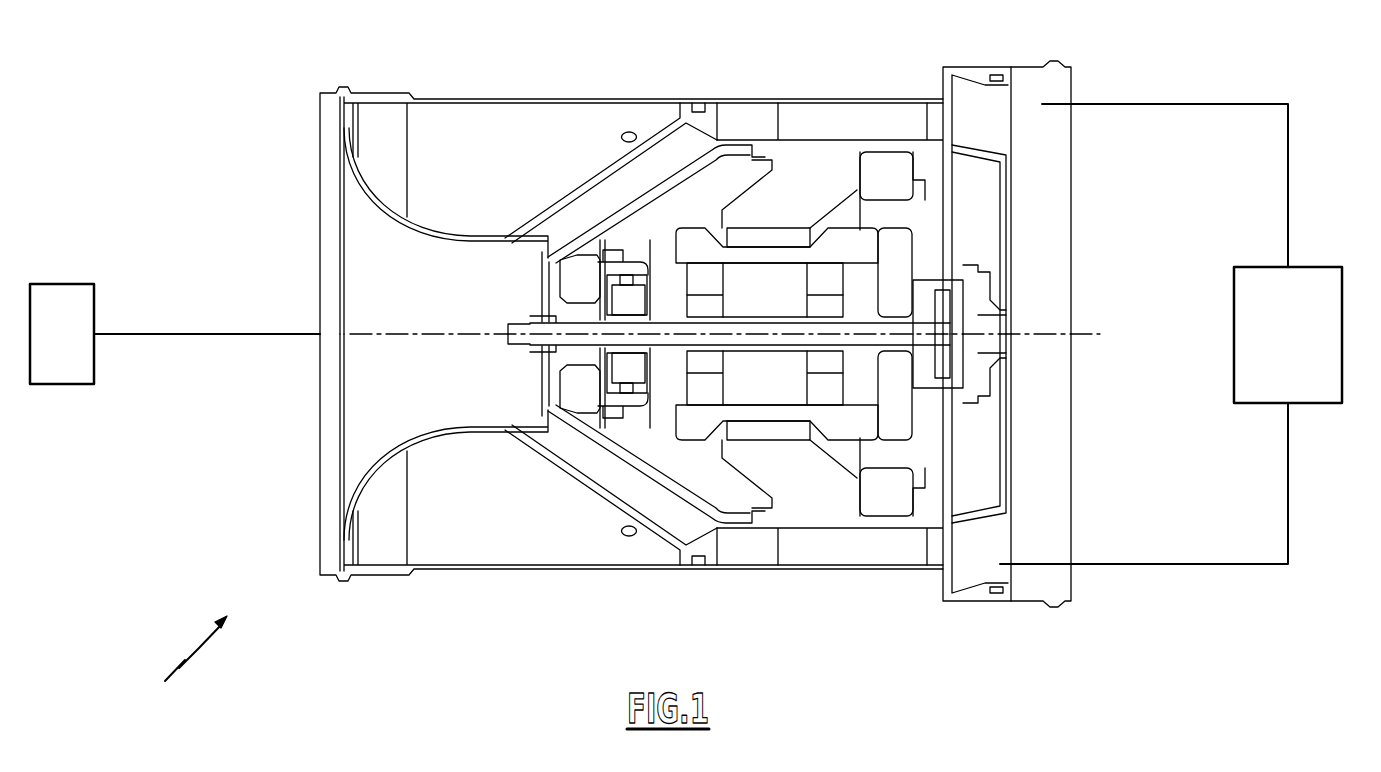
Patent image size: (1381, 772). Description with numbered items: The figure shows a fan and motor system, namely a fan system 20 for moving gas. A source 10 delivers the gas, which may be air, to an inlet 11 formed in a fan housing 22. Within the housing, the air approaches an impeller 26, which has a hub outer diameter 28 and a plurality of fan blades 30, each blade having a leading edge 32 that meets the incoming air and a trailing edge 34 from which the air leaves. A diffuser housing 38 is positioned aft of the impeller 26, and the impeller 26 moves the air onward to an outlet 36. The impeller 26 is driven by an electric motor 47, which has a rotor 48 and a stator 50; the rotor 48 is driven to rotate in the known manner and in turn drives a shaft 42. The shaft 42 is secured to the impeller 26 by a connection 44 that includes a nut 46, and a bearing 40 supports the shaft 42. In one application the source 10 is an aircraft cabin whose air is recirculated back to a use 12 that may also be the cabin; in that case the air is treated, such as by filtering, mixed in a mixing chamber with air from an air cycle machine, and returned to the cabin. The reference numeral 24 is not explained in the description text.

The source 10 is at (67, 284).
The inlet 11 is at (340, 348).
The use 12 is at (1307, 287).
The fan system 20 is at (179, 658).
The fan housing 22 is at (433, 233).
The housing 24 is at (548, 98).
The impeller 26 is at (548, 288).
The hub outer diameter 28 is at (548, 257).
The fan blades 30 is at (632, 188).
The leading edge 32 is at (500, 239).
The trailing edge 34 is at (703, 125).
The outlet 36 is at (747, 115).
The diffuser housing 38 is at (777, 163).
The bearing 40 is at (548, 403).
The shaft 42 is at (887, 328).
The connection 44 is at (563, 308).
The nut 46 is at (545, 352).
The electric motor 47 is at (814, 462).
The rotor 48 is at (807, 387).
The stator 50 is at (850, 248).